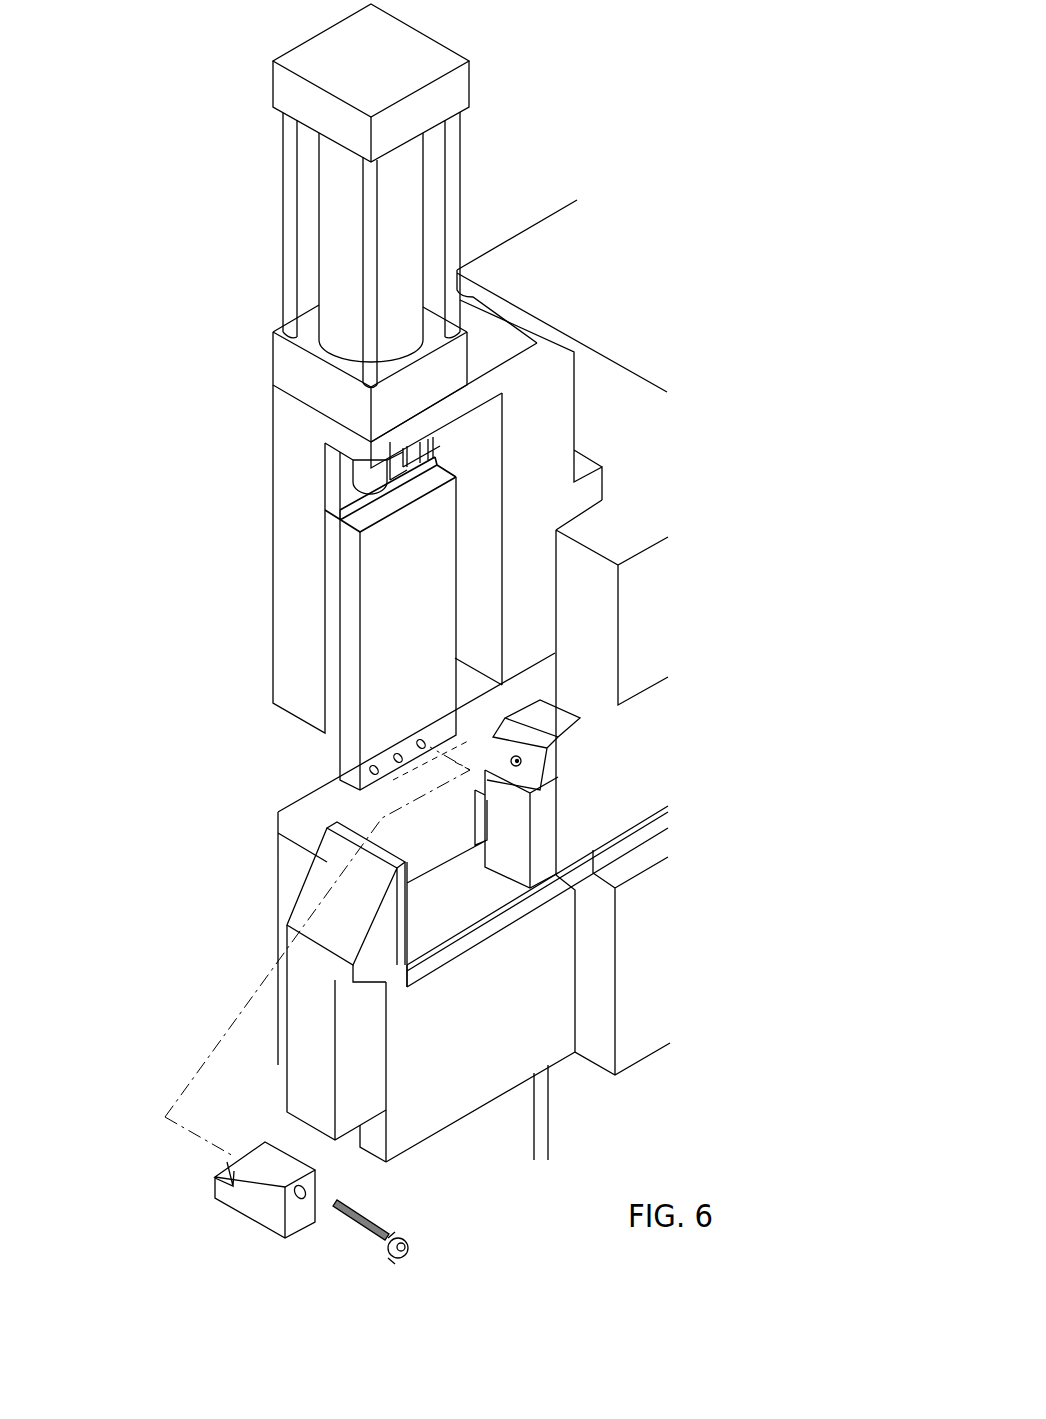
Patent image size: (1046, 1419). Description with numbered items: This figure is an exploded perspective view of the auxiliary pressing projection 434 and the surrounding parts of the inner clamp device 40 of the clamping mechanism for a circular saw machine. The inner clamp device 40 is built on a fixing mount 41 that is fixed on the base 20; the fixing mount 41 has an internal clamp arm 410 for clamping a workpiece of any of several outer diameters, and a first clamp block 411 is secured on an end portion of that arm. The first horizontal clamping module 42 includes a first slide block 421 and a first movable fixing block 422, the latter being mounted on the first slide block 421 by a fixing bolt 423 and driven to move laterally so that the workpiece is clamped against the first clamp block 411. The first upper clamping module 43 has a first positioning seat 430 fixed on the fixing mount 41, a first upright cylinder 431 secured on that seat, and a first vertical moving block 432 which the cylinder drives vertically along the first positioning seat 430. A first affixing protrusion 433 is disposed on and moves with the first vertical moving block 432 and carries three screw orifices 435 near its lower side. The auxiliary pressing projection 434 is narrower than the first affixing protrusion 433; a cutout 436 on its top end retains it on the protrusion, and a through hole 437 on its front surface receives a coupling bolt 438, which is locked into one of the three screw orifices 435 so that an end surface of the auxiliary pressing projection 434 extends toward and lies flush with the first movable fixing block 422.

The base 20 is at (540, 1097).
The inner clamp device 40 is at (634, 249).
The fixing mount 41 is at (545, 245).
The first horizontal clamping module 42 is at (710, 723).
The first upper clamping module 43 is at (222, 426).
The internal clamp arm 410 is at (478, 942).
The first clamp block 411 is at (312, 915).
The first slide block 421 is at (637, 813).
The first movable fixing block 422 is at (578, 890).
The fixing bolt 423 is at (520, 761).
The first positioning seat 430 is at (285, 460).
The first upright cylinder 431 is at (329, 215).
The first vertical moving block 432 is at (340, 497).
The first affixing protrusion 433 is at (345, 580).
The auxiliary pressing projection 434 is at (248, 1203).
The screw orifices 435 is at (373, 766).
The cutout 436 is at (228, 1166).
The through hole 437 is at (298, 1200).
The coupling bolt 438 is at (390, 1240).